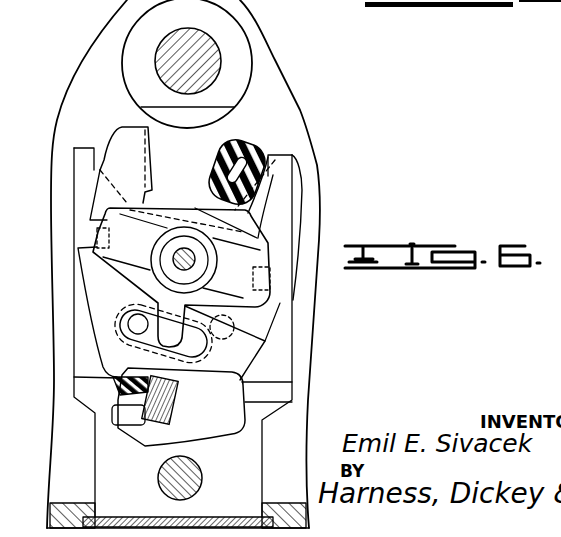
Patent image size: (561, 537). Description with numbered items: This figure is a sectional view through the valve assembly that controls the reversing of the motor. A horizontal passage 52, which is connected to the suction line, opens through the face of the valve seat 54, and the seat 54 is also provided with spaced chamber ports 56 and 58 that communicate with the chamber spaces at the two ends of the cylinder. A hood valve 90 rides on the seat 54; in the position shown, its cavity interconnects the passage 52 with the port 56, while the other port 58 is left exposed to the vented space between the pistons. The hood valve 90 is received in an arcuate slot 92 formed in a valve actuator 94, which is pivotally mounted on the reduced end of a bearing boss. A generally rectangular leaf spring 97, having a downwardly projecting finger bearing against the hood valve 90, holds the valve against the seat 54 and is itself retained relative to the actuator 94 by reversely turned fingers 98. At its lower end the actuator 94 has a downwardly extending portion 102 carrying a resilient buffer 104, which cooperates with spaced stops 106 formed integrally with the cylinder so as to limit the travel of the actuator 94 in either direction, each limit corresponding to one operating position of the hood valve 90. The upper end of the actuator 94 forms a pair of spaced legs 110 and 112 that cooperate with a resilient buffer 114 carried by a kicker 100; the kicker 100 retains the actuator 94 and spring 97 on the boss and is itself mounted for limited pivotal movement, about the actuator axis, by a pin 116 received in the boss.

The horizontal passage 52 is at (230, 347).
The valve seat 54 is at (280, 308).
The chamber port 56 is at (107, 330).
The chamber port 58 is at (243, 328).
The hood valve 90 is at (117, 347).
The arcuate slot 92 is at (185, 318).
The valve actuator 94 is at (284, 224).
The leaf spring 97 is at (259, 197).
The reversely turned fingers 98 is at (96, 235).
The kicker 100 is at (242, 136).
The downwardly extending portion 102 is at (152, 418).
The resilient buffer 104 is at (172, 411).
The stops 106 is at (86, 404).
The leg 110 is at (147, 162).
The leg 112 is at (268, 170).
The resilient buffer 114 is at (263, 143).
The pin 116 is at (180, 266).